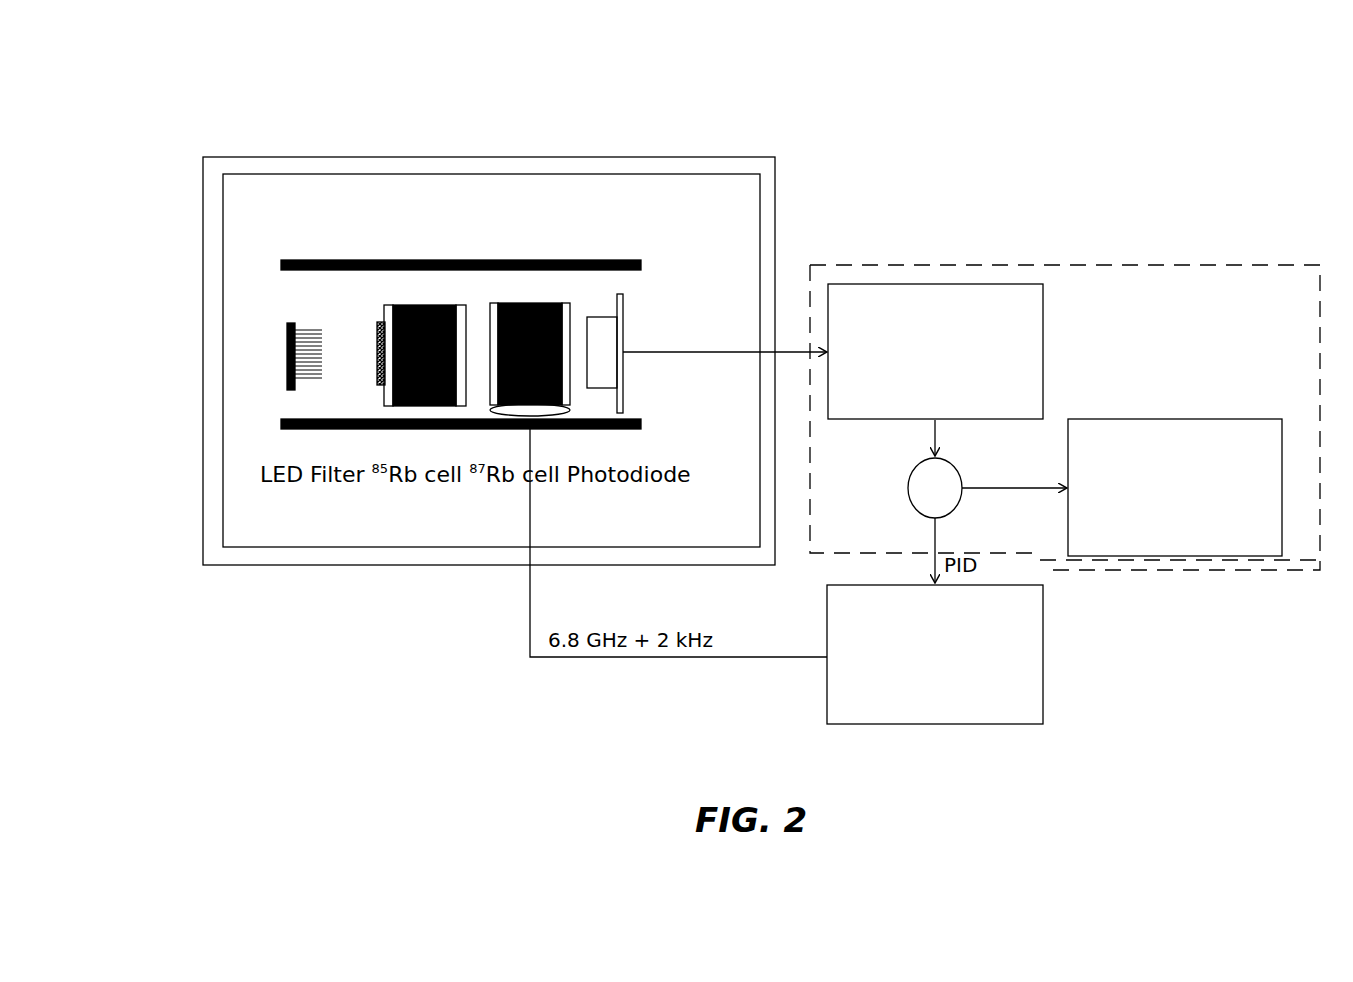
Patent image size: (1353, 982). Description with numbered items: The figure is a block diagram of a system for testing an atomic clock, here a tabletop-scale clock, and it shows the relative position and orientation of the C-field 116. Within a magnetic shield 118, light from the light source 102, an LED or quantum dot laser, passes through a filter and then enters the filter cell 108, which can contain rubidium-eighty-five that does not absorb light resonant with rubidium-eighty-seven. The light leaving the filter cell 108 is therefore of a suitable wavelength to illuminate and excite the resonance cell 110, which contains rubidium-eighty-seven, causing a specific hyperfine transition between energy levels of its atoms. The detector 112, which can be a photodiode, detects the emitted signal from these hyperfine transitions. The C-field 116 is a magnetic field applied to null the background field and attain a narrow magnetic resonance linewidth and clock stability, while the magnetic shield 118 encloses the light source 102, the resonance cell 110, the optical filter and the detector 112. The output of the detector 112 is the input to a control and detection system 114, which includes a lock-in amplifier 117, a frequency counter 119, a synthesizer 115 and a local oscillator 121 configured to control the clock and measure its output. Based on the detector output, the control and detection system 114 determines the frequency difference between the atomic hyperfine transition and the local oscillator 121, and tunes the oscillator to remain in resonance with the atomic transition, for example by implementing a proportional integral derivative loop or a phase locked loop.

The light source 102 is at (280, 337).
The filter cell 108 is at (415, 298).
The resonance cell 110 is at (520, 288).
The detector 112 is at (650, 310).
The control and detection system 114 is at (1122, 268).
The synthesizer 115 is at (1043, 645).
The C-field 116 is at (594, 228).
The lock-in amplifier 117 is at (935, 351).
The magnetic shield 118 is at (774, 157).
The frequency counter 119 is at (1175, 487).
The local oscillator 121 is at (943, 483).